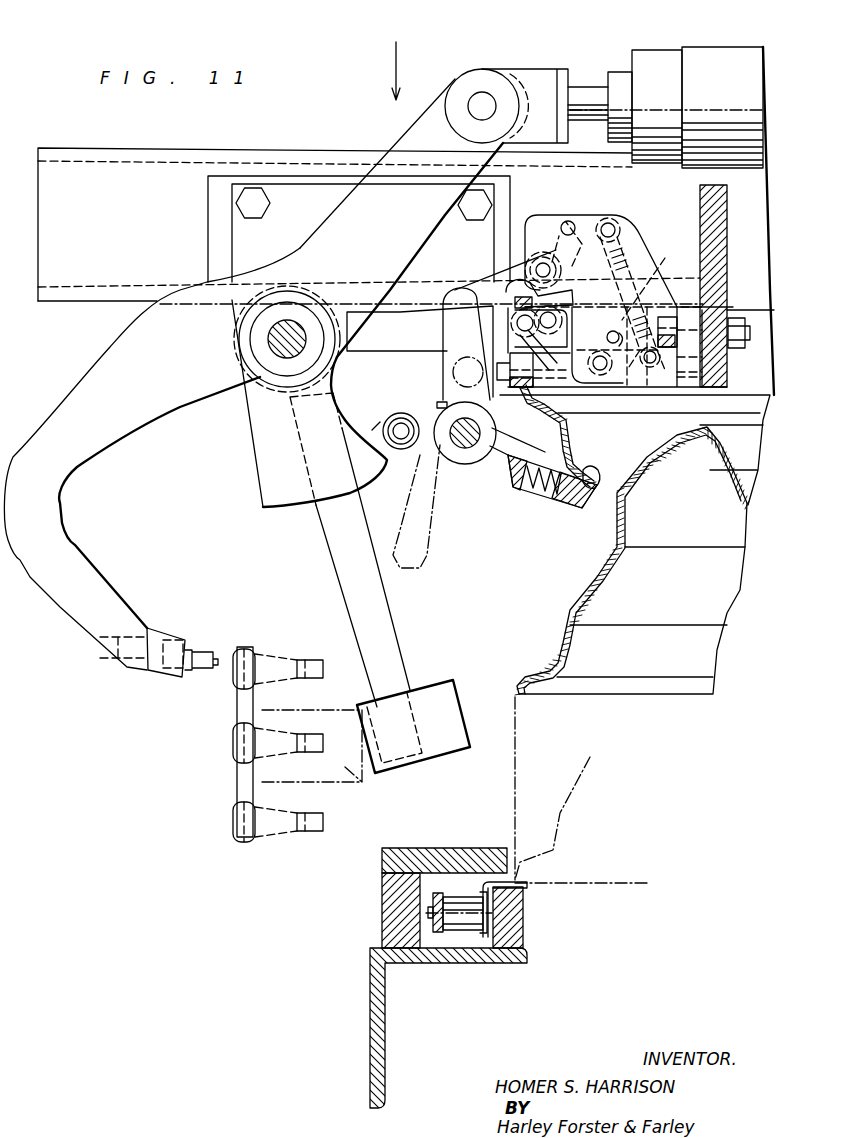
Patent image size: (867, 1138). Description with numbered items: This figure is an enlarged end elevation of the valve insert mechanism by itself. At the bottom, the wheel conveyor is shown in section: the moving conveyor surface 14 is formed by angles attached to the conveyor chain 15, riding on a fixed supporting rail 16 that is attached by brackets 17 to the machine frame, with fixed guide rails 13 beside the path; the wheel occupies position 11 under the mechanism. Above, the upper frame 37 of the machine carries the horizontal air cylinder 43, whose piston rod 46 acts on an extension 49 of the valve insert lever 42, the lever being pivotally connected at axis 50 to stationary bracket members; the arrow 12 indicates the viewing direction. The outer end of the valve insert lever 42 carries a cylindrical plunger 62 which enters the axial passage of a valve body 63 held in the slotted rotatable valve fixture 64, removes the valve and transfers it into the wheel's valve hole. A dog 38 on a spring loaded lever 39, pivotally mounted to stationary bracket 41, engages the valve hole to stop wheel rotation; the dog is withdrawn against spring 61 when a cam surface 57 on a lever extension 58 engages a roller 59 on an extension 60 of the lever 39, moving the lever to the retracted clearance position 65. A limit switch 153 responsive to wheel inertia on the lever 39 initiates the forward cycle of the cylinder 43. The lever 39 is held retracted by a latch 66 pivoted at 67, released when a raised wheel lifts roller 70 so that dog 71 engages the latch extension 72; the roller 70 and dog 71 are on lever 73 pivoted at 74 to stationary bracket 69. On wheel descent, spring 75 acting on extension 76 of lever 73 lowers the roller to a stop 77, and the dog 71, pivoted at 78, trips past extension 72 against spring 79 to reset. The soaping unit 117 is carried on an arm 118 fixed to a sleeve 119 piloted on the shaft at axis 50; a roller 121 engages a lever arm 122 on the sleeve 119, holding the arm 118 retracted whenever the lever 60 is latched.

The wheel position 11 is at (583, 590).
The direction arrow 12 is at (411, 71).
The fixed guide rails 13 is at (480, 850).
The moving conveyor surface 14 is at (530, 883).
The conveyor chain 15 is at (462, 930).
The fixed supporting rail 16 is at (523, 921).
The brackets 17 is at (385, 1043).
The upper frame 37 is at (122, 158).
The dog 38 is at (587, 474).
The spring loaded lever 39 is at (520, 488).
The stationary bracket 41 is at (450, 313).
The valve insert lever 42 is at (113, 603).
The air cylinder 43 is at (730, 58).
The piston rod 46 is at (587, 93).
The extension 49 is at (408, 145).
The pivotal axis 50 is at (283, 353).
The cam surface 57 is at (380, 422).
The lever extension 58 is at (298, 498).
The roller 59 is at (433, 413).
The extension 60 is at (392, 414).
The spring 61 is at (494, 438).
The cylindrical plunger 62 is at (200, 655).
The valve body 63 is at (272, 656).
The slotted rotatable valve fixture 64 is at (243, 716).
The retracted clearance position 65 is at (430, 527).
The latch 66 is at (468, 290).
The pivot 67 is at (540, 263).
The stationary bracket 69 is at (595, 223).
The roller 70 is at (522, 356).
The dog 71 is at (536, 292).
The latch extension 72 is at (518, 323).
The lever 73 is at (565, 378).
The pivot 74 is at (597, 357).
The spring 75 is at (662, 272).
The extension 76 is at (653, 387).
The stop 77 is at (615, 331).
The pivot 78 is at (530, 330).
The spring 79 is at (580, 310).
The soaping unit 117 is at (430, 750).
The arm 118 is at (387, 657).
The sleeve 119 is at (312, 284).
The roller 121 is at (447, 364).
The lever arm 122 is at (425, 344).
The limit switch 153 is at (465, 450).